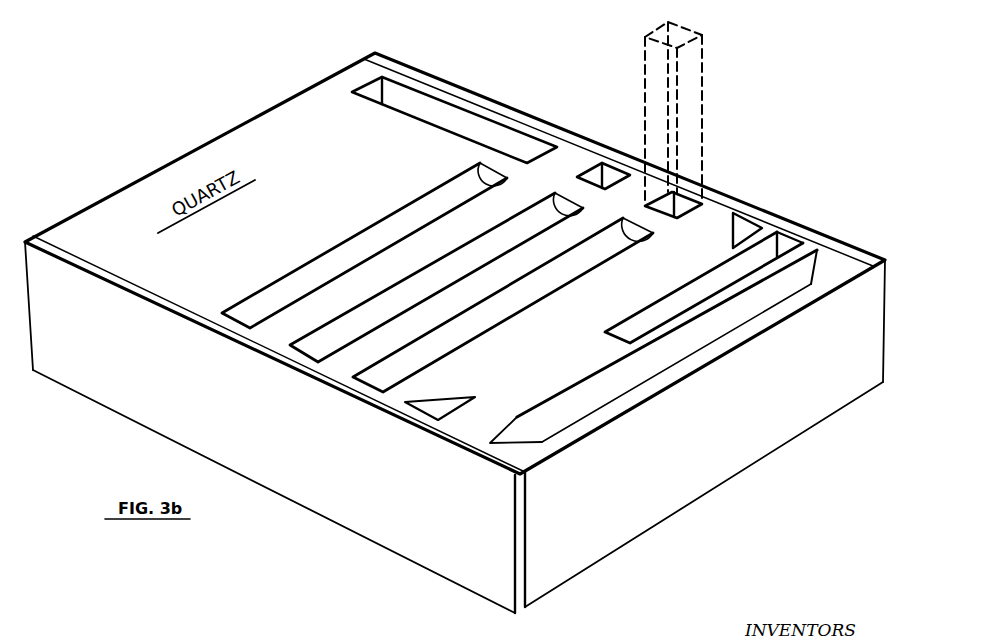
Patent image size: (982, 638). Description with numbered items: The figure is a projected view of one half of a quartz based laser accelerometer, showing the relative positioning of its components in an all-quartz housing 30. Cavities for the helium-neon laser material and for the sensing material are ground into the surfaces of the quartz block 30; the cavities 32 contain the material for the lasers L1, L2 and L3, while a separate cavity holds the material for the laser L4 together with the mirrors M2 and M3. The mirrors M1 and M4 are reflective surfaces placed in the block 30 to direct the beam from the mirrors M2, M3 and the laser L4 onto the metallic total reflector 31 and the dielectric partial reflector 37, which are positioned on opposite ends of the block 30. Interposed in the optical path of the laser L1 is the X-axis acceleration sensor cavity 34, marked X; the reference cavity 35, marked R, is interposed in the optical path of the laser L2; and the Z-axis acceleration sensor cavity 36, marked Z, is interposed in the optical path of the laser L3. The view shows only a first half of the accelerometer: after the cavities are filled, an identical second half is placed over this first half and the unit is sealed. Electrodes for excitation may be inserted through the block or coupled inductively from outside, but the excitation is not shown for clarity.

The quartz housing 30 is at (340, 184).
The metallic total reflector 31 is at (107, 365).
The cavities 32 is at (437, 277).
The X-axis acceleration sensor cavity 34 is at (405, 100).
The reference cavity 35 is at (622, 173).
The Z-axis acceleration sensor cavity 36 is at (684, 206).
The dielectric partial reflector 37 is at (448, 88).
The X-axis X is at (438, 120).
The reference R is at (603, 157).
The Z-axis Z is at (673, 113).
The laser L1 is at (364, 245).
The laser L2 is at (436, 277).
The laser L3 is at (417, 212).
The laser L4 is at (704, 306).
The mirror M1 is at (430, 405).
The mirror M2 is at (671, 346).
The mirror M3 is at (817, 278).
The mirror M4 is at (723, 244).